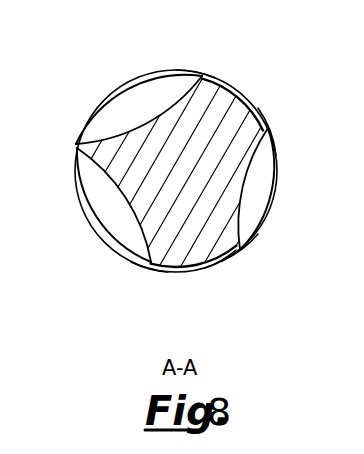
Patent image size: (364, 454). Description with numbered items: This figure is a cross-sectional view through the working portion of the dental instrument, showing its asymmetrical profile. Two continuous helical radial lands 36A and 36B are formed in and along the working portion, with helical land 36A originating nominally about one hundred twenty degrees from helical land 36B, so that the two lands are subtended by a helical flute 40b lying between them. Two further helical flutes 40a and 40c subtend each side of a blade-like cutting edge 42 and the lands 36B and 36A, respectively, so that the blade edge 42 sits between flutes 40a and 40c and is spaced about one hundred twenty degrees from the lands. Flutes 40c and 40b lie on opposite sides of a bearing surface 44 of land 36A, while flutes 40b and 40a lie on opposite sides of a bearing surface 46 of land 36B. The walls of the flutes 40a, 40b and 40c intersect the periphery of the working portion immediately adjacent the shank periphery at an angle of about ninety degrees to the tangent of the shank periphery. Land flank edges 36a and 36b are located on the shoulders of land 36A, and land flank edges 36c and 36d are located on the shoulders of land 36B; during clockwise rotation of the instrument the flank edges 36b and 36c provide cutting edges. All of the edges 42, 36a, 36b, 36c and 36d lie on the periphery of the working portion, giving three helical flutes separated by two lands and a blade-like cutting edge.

The helical radial land 36A is at (194, 258).
The helical radial land 36B is at (240, 110).
The land flank edge 36a is at (238, 248).
The land flank edge 36b is at (150, 263).
The land flank edge 36c is at (268, 133).
The land flank edge 36d is at (190, 77).
The helical flute 40a is at (118, 100).
The helical flute 40b is at (268, 178).
The helical flute 40c is at (110, 232).
The blade-like cutting edge 42 is at (76, 146).
The bearing surface 44 is at (223, 262).
The bearing surface 46 is at (267, 118).